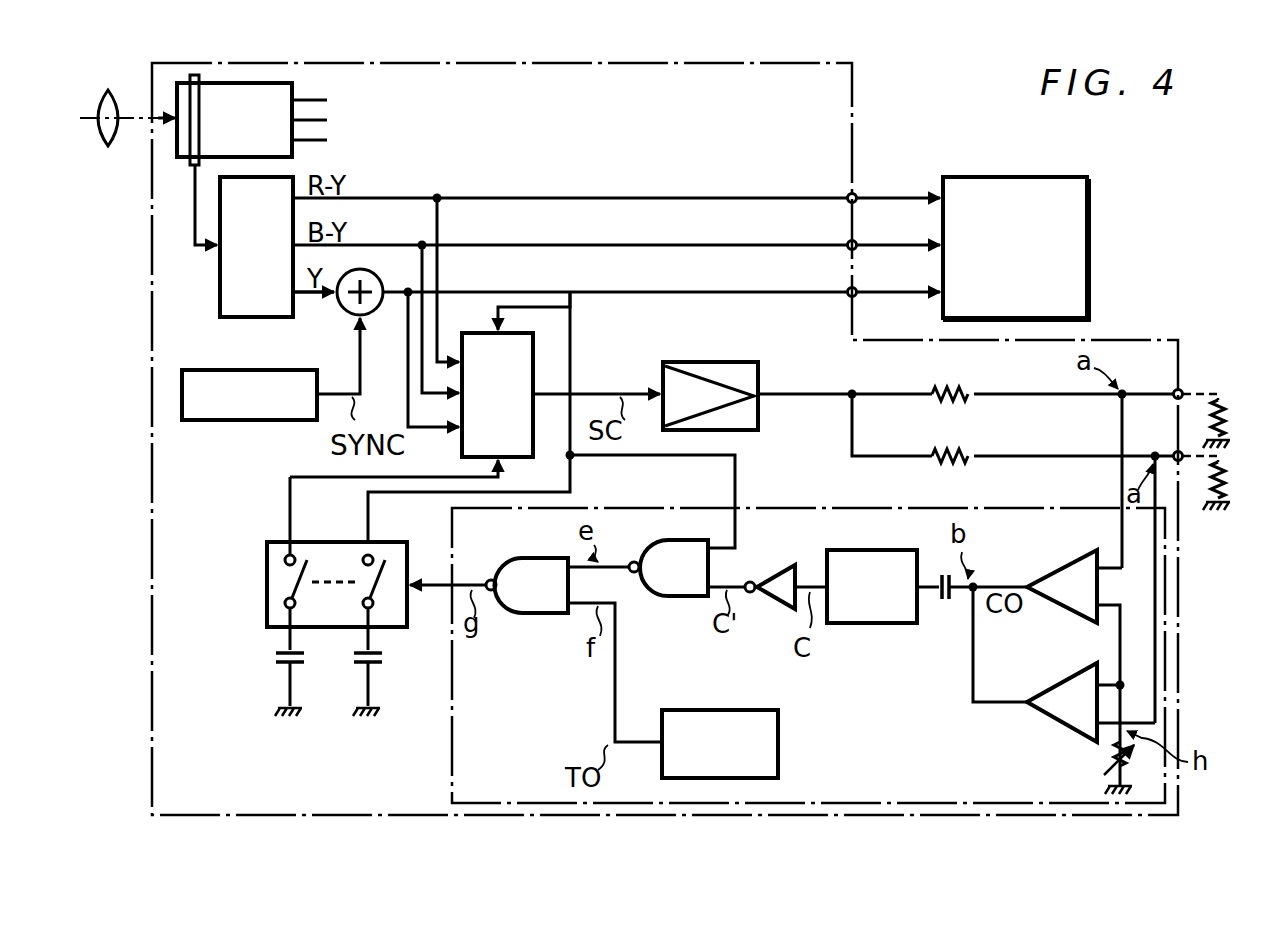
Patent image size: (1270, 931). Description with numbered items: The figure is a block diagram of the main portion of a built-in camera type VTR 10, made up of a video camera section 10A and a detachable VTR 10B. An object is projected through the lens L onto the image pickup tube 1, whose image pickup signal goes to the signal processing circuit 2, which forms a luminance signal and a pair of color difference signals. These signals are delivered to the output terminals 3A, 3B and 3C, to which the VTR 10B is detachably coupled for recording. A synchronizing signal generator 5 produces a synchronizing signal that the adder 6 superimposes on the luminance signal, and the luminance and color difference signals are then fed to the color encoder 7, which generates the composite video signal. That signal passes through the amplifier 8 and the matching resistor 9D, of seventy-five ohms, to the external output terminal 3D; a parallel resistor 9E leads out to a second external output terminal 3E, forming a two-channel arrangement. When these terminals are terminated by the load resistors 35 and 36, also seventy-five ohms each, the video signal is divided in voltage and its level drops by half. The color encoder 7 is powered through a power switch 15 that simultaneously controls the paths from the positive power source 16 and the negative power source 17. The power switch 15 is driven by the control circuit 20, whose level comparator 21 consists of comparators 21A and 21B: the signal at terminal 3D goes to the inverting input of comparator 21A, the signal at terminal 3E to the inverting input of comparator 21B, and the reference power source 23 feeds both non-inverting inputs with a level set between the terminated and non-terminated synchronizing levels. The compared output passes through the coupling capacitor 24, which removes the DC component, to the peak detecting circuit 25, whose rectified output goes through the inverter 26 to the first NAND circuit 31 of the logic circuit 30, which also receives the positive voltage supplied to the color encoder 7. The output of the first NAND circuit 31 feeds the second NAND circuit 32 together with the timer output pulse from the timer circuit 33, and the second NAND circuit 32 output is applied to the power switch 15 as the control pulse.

The image pickup tube 1 is at (295, 85).
The signal processing circuit 2 is at (247, 320).
The output terminal 3A is at (857, 194).
The output terminal 3B is at (857, 241).
The output terminal 3C is at (857, 288).
The external output terminal 3D is at (1173, 392).
The external output terminal 3E is at (1173, 452).
The synchronizing signal generator 5 is at (250, 422).
The adder 6 is at (376, 312).
The color encoder 7 is at (520, 459).
The amplifier 8 is at (760, 418).
The matching resistor 9D is at (962, 392).
The resistor 9E is at (962, 454).
The built-in camera type VTR 10 is at (940, 130).
The video camera section 10A is at (950, 89).
The VTR 10B is at (1172, 263).
The power switch 15 is at (262, 598).
The positive power source 16 is at (374, 660).
The negative power source 17 is at (284, 660).
The control circuit 20 is at (862, 497).
The level comparator 21 is at (1062, 638).
The comparator 21A is at (1042, 572).
The comparator 21B is at (1044, 718).
The reference power source 23 is at (1108, 760).
The coupling capacitor 24 is at (935, 603).
The peak detecting circuit 25 is at (842, 550).
The inverter 26 is at (780, 580).
The logic circuit 30 is at (668, 662).
The first NAND circuit 31 is at (672, 540).
The second NAND circuit 32 is at (540, 615).
The timer circuit 33 is at (780, 750).
The load resistor 35 is at (1224, 402).
The load resistor 36 is at (1218, 506).
The lens L is at (118, 150).